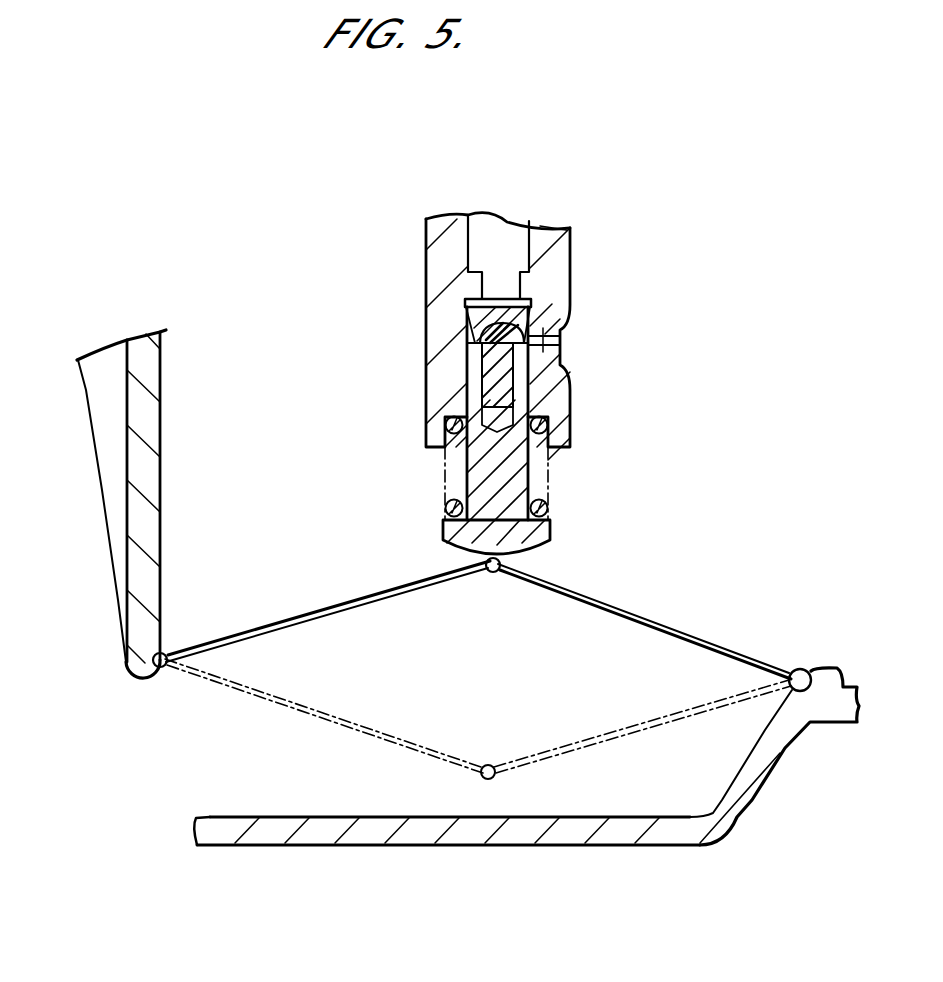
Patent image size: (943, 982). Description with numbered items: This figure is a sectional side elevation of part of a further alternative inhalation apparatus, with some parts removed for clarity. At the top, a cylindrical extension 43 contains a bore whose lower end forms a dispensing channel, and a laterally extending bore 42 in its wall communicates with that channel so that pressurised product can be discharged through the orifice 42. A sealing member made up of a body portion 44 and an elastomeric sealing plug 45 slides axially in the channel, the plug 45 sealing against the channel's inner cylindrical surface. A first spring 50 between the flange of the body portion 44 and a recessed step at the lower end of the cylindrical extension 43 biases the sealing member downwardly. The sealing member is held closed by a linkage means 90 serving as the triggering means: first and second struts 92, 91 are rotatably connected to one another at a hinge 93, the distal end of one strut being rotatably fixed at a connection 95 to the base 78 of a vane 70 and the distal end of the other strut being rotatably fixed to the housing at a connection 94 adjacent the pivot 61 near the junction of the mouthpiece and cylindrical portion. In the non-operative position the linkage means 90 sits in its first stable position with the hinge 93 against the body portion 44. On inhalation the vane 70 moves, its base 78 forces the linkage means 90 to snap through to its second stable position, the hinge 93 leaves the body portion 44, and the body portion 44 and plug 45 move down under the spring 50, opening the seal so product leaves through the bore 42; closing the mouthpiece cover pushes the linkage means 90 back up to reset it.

The cylindrical extension 43 is at (443, 280).
The lateral bore 42 is at (564, 332).
The sealing plug 45 is at (542, 363).
The body portion 44 is at (503, 484).
The first spring 50 is at (446, 508).
The vane 70 is at (97, 503).
The lower end of the vane 78 is at (137, 680).
The pivot pin 95 is at (172, 652).
The link 92 is at (346, 607).
The hinge 93 is at (488, 573).
The link 91 is at (633, 615).
The pivot pin 94 is at (790, 670).
The pivot 61 is at (804, 667).
The linkage means 90 is at (550, 638).